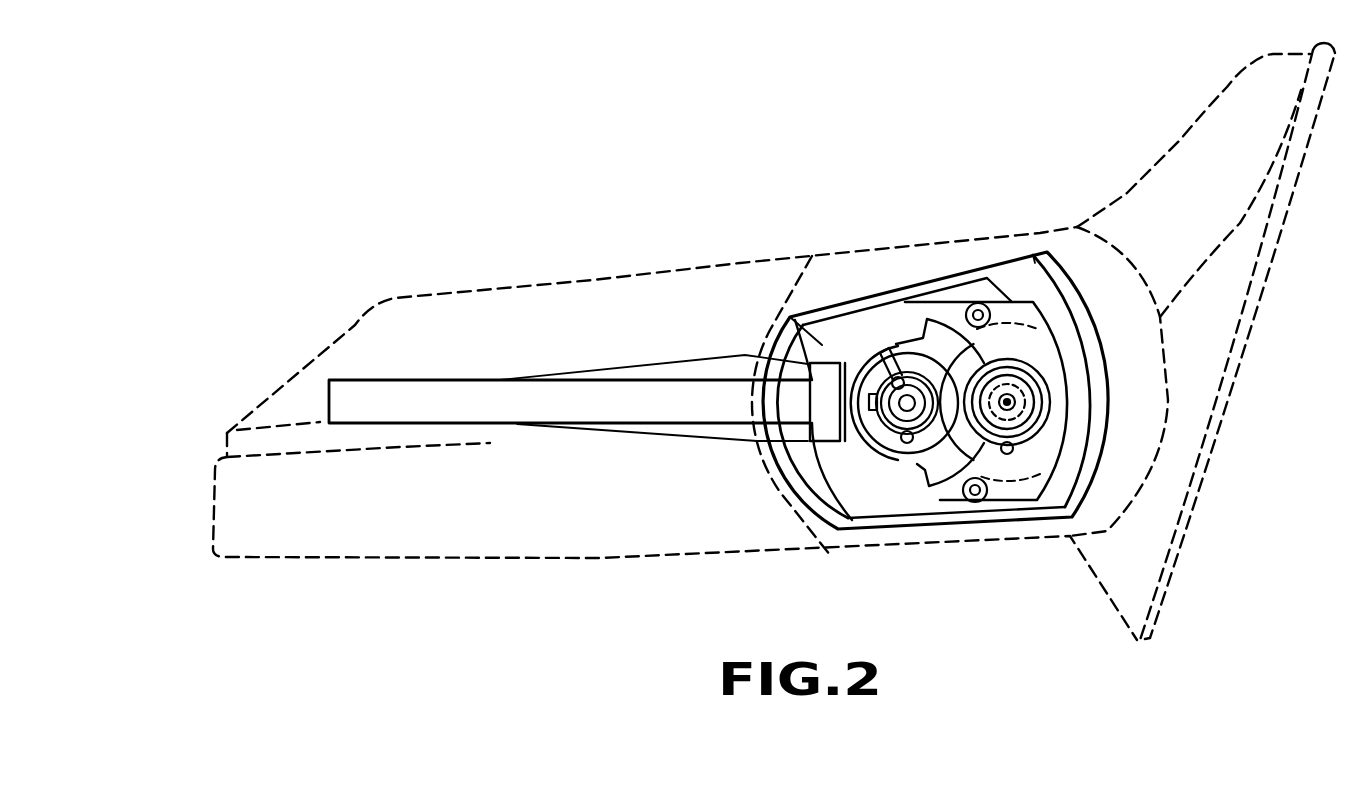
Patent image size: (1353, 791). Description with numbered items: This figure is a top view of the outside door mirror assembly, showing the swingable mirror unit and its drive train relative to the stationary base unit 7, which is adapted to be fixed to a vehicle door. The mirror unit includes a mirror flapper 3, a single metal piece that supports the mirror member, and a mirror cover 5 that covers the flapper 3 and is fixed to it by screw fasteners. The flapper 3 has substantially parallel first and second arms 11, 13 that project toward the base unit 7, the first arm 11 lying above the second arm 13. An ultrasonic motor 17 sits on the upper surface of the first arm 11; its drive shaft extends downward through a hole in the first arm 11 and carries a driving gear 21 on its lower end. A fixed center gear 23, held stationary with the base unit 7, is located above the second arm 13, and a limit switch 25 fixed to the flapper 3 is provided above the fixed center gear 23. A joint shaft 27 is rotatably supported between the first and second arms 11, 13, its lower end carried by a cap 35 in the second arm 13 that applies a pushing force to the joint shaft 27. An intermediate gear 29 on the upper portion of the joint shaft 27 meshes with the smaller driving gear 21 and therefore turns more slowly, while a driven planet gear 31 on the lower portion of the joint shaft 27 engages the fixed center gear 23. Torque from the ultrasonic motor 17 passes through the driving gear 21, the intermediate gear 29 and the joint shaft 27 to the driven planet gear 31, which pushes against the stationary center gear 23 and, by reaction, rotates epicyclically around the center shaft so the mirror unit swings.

The mirror flapper 3 is at (360, 380).
The mirror cover 5 is at (497, 287).
The stationary base unit 7 is at (1193, 503).
The first arm 11 is at (982, 313).
The second arm 13 is at (955, 302).
The ultrasonic motor 17 is at (790, 317).
The driving gear 21 is at (890, 412).
The fixed center gear 23 is at (938, 477).
The limit switch 25 is at (850, 360).
The joint shaft 27 is at (1012, 396).
The intermediate gear 29 is at (1075, 358).
The driven planet gear 31 is at (1008, 398).
The cap 35 is at (1018, 432).